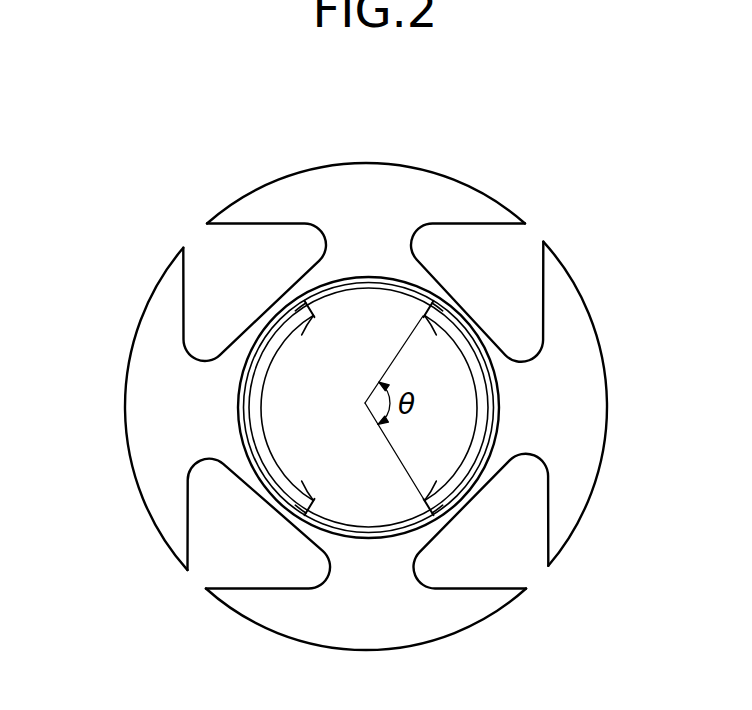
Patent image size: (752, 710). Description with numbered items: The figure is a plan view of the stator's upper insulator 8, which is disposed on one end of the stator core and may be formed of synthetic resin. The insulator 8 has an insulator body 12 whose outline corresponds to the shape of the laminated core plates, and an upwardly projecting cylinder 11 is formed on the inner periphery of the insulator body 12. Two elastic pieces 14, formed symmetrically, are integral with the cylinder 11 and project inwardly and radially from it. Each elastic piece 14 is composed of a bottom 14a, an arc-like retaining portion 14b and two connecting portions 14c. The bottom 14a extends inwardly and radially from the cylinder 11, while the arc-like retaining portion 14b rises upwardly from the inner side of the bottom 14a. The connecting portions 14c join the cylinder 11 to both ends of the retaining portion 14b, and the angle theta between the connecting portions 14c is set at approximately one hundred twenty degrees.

The insulator 8 is at (557, 232).
The cylinder 11 is at (496, 423).
The insulator body 12 is at (571, 498).
The elastic piece 14 is at (263, 401).
The bottom 14a is at (247, 402).
The arc-like retaining portion 14b is at (428, 318).
The connecting portion 14c is at (308, 307).